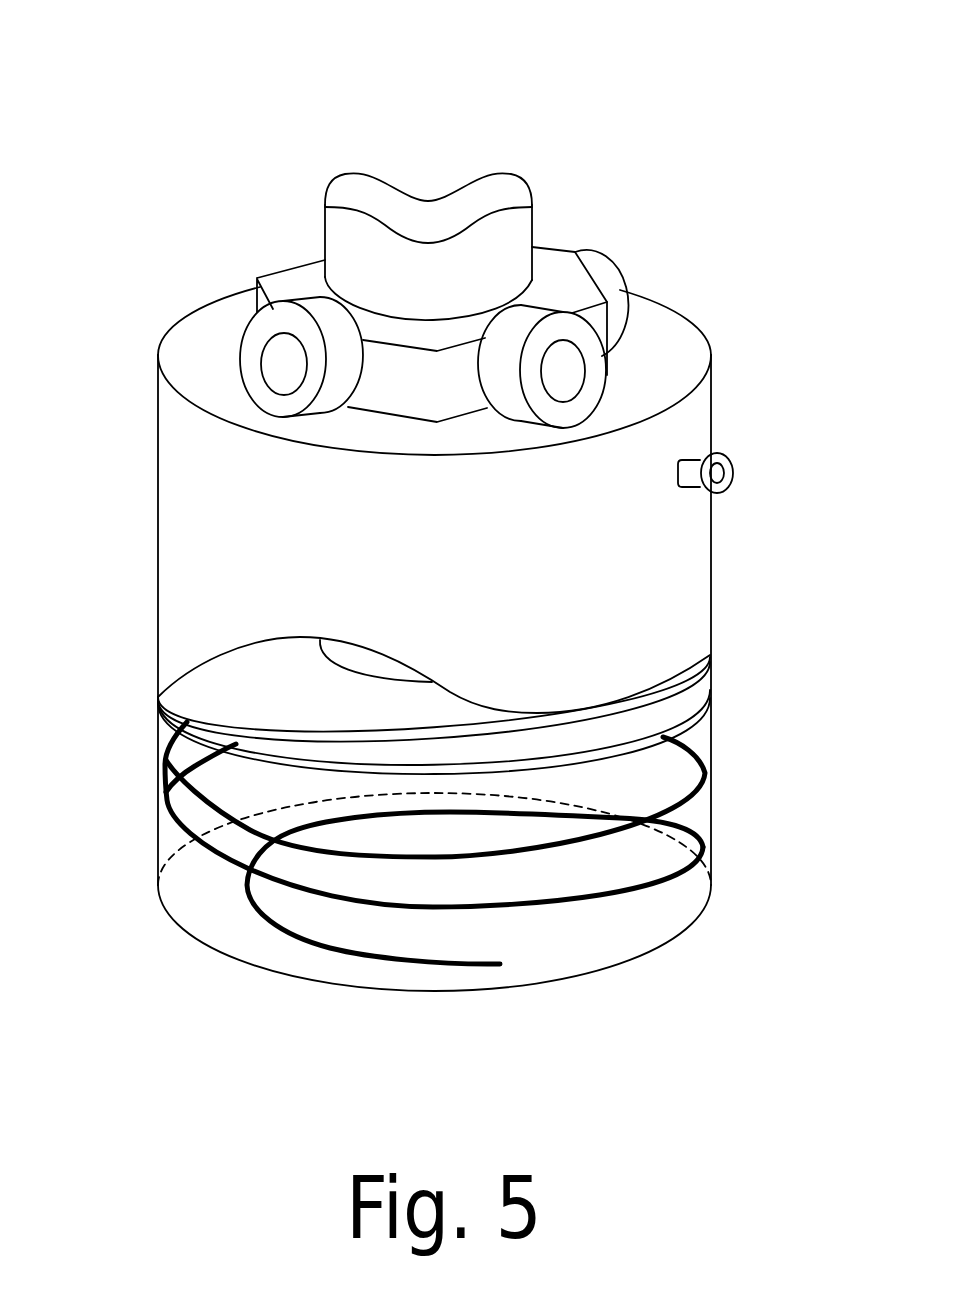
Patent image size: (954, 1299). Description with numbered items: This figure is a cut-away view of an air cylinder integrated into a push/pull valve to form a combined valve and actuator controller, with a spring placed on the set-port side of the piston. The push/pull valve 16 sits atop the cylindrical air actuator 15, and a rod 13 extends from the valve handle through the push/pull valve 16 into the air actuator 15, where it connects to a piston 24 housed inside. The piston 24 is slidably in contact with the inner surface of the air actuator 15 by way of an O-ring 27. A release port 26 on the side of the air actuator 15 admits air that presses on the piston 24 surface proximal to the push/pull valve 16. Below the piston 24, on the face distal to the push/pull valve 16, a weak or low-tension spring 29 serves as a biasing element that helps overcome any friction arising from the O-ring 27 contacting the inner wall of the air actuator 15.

The push/pull valve 16 is at (240, 150).
The air actuator 15 is at (158, 533).
The rod 13 is at (348, 653).
The O-ring 27 is at (695, 692).
The piston 24 is at (672, 722).
The spring 29 is at (705, 773).
The release port 26 is at (698, 472).